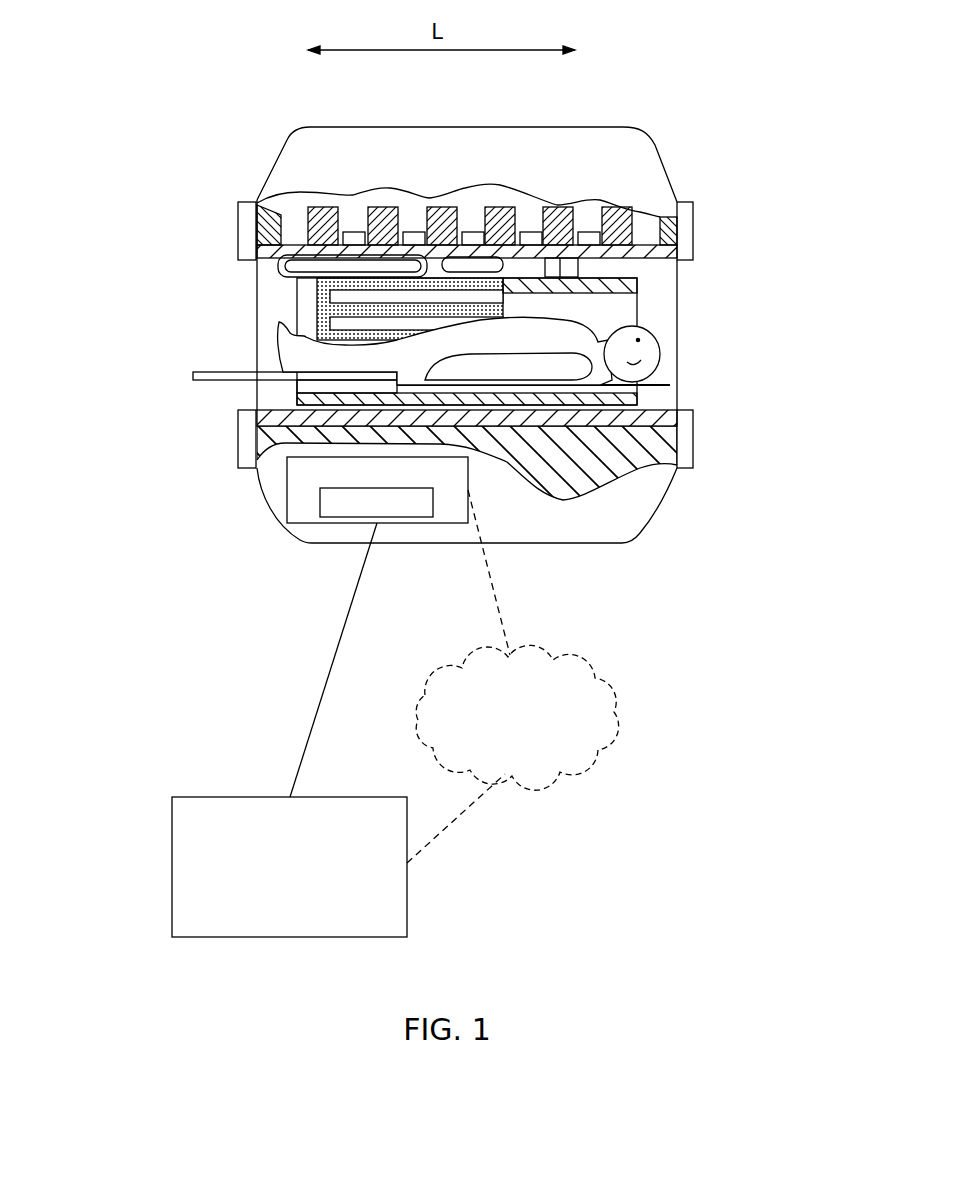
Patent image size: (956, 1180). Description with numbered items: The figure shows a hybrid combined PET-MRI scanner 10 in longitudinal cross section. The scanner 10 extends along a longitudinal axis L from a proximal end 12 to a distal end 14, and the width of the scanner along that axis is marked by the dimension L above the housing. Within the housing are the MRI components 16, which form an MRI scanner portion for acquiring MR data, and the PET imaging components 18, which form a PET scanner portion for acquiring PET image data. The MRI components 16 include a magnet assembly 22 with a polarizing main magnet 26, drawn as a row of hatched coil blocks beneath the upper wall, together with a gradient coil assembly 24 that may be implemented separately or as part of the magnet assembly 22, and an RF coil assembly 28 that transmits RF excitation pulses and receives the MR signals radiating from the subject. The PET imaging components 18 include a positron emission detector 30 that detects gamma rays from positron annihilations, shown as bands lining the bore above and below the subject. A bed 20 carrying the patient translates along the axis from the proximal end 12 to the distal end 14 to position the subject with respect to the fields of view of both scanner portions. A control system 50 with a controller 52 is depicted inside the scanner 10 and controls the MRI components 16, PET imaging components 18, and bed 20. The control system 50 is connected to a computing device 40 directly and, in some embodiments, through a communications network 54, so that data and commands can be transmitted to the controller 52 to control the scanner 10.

The combined PET-MRI scanner 10 is at (257, 57).
The proximal end 12 is at (160, 348).
The distal end 14 is at (730, 410).
The MRI components 16 is at (284, 186).
The PET imaging components 18 is at (580, 268).
The bed 20 is at (205, 381).
The magnet assembly 22 is at (262, 175).
The gradient coil assembly 24 is at (271, 254).
The polarizing main magnet 26 is at (369, 207).
The RF coil assembly 28 is at (624, 294).
The positron emission detector 30 is at (548, 279).
The computing device 40 is at (172, 825).
The control system 50 is at (286, 487).
The controller 52 is at (330, 519).
The communications network 54 is at (617, 712).